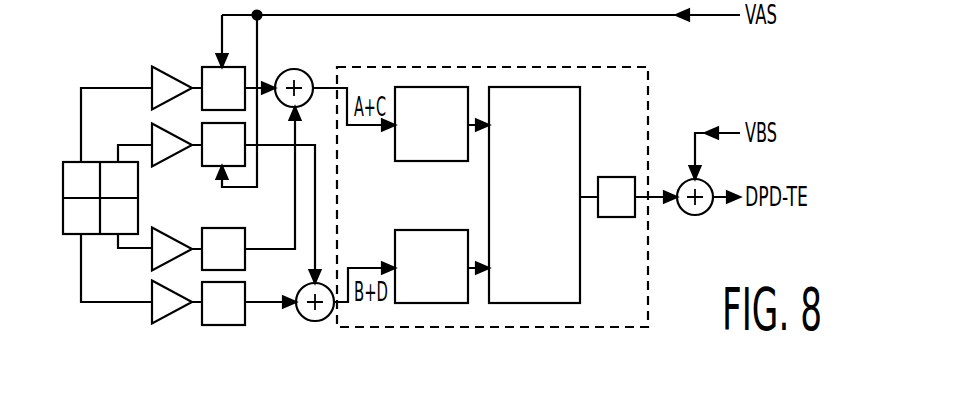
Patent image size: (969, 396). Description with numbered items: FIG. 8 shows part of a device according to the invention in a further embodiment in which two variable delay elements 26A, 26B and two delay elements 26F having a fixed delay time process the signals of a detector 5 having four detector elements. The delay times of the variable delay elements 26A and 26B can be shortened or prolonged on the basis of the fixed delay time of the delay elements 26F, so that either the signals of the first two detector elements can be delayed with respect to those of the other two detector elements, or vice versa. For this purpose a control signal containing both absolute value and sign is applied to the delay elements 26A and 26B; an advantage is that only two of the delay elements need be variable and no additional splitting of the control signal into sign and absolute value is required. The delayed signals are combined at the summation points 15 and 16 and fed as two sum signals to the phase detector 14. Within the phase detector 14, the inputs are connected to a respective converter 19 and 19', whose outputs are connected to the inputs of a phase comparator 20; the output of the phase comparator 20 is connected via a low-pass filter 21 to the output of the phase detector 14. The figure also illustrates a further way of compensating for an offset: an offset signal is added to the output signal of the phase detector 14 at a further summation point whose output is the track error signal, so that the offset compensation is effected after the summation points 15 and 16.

The quadrant photodetector 5 is at (70, 234).
The phase detector 14 is at (466, 64).
The summation point 15 is at (308, 69).
The summation point 16 is at (303, 319).
The converter 19 is at (431, 124).
The converter 19' is at (431, 266).
The phase comparator 20 is at (526, 202).
The low-pass filter 21 is at (606, 210).
The variable delay element 26A is at (240, 101).
The variable delay element 26B is at (240, 157).
The delay element having a fixed delay time 26F is at (240, 261).